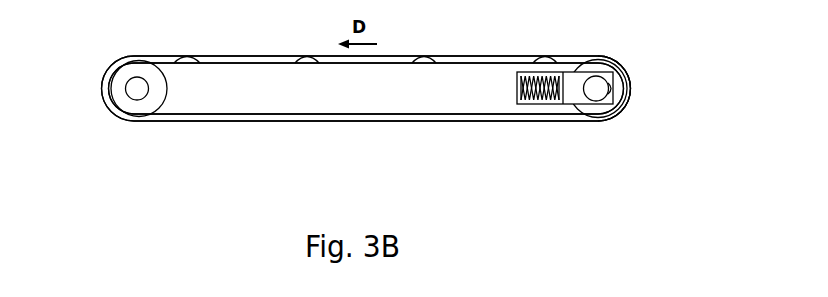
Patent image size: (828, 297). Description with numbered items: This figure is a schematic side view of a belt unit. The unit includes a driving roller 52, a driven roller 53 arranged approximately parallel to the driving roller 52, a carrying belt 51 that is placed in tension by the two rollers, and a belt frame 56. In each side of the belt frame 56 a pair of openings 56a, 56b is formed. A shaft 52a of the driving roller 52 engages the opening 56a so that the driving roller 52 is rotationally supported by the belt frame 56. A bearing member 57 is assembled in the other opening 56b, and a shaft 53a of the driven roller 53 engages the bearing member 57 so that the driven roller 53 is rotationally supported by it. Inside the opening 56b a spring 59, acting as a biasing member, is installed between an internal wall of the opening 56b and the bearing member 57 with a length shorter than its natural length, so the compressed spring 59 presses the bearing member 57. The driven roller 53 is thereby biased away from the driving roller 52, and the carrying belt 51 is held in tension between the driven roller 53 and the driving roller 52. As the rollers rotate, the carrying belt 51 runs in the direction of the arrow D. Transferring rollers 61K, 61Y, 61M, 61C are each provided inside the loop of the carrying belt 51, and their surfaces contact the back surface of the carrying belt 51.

The carrying belt 51 is at (222, 123).
The driving roller 52 is at (128, 122).
The shaft 52a is at (130, 82).
The driven roller 53 is at (600, 118).
The shaft 53a is at (624, 101).
The belt frame 56 is at (177, 115).
The opening 56a is at (127, 99).
The opening 56b is at (538, 105).
The bearing member 57 is at (617, 64).
The spring 59 is at (520, 104).
The transferring roller 61C is at (223, 42).
The transferring roller 61M is at (304, 57).
The transferring roller 61Y is at (424, 57).
The transferring roller 61K is at (545, 57).